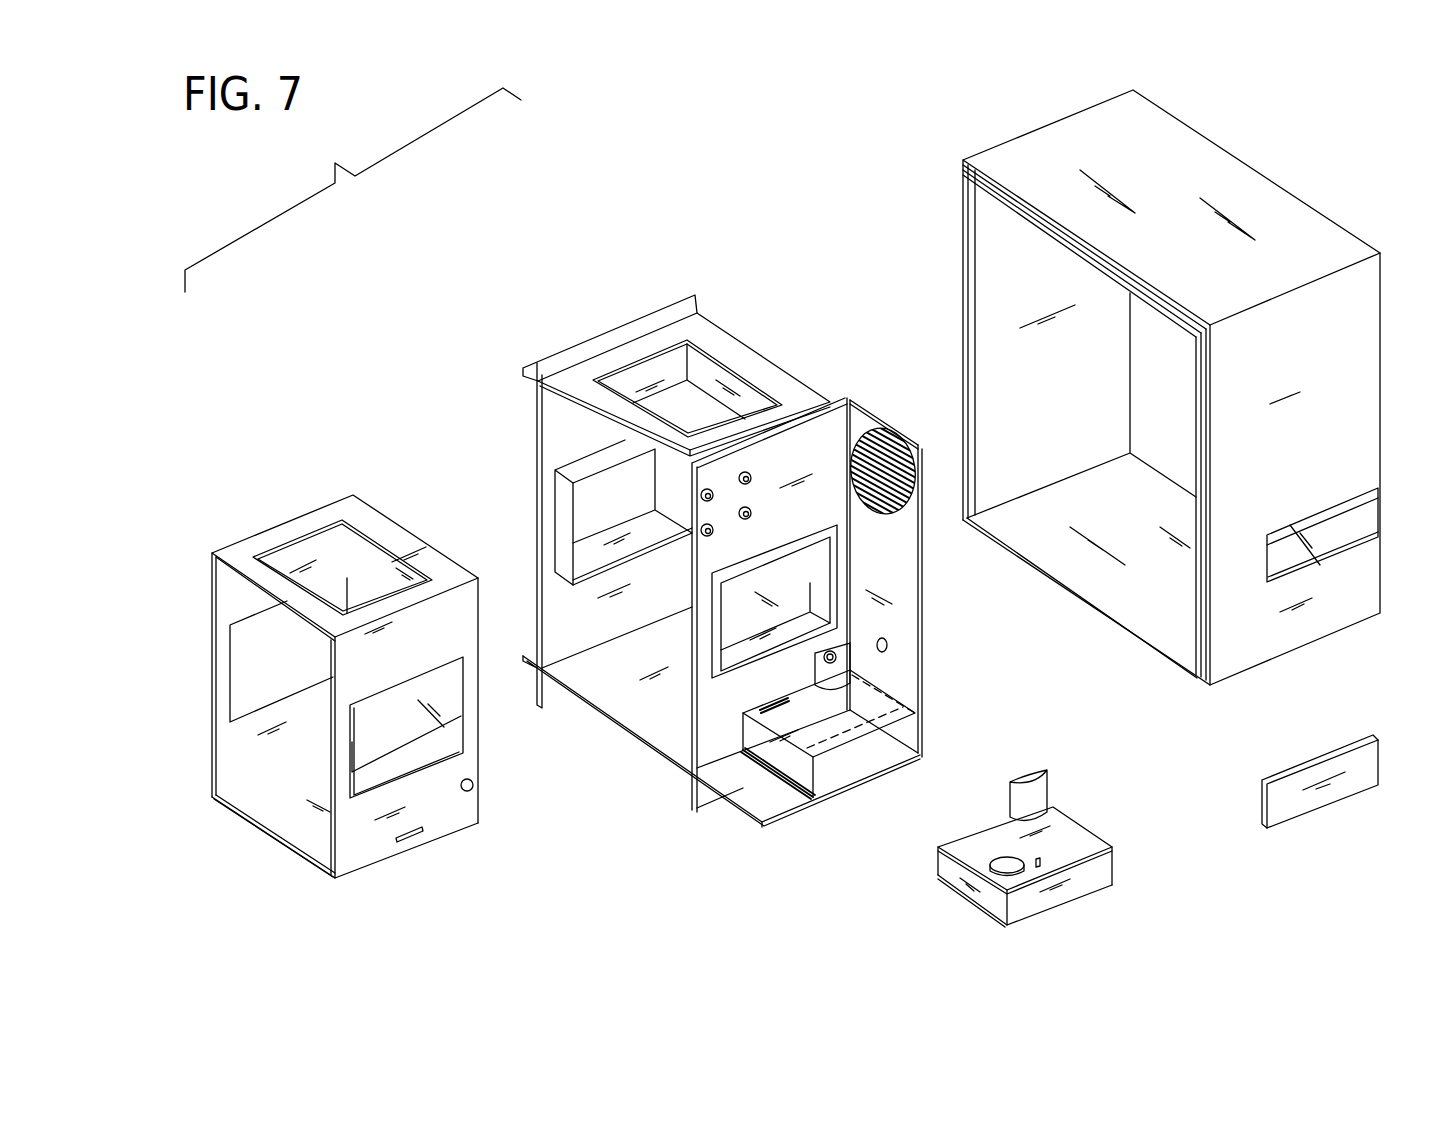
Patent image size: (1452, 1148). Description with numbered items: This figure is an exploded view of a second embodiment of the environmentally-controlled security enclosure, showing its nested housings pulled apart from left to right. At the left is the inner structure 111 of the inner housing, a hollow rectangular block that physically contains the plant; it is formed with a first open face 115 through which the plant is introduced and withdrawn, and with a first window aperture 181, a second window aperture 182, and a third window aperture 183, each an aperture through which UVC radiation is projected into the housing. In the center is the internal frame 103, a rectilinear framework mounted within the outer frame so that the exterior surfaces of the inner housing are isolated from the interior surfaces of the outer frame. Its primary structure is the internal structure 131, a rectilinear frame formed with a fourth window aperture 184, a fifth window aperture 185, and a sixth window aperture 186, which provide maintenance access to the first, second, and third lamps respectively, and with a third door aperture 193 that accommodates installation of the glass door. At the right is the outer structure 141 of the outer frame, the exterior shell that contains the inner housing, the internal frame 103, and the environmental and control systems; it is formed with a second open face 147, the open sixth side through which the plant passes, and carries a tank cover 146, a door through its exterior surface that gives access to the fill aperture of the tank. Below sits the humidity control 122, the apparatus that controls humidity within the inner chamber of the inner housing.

The internal frame 103 is at (642, 256).
The inner structure 111 is at (352, 658).
The first open face 115 is at (268, 766).
The humidity control 122 is at (1083, 822).
The internal structure 131 is at (676, 319).
The outer structure 141 is at (1156, 459).
The tank cover 146 is at (1362, 520).
The second open face 147 is at (1025, 295).
The first window aperture 181 is at (250, 664).
The second window aperture 182 is at (322, 541).
The third window aperture 183 is at (442, 709).
The fourth window aperture 184 is at (608, 496).
The fifth window aperture 185 is at (684, 372).
The sixth window aperture 186 is at (818, 581).
The third door aperture 193 is at (637, 632).